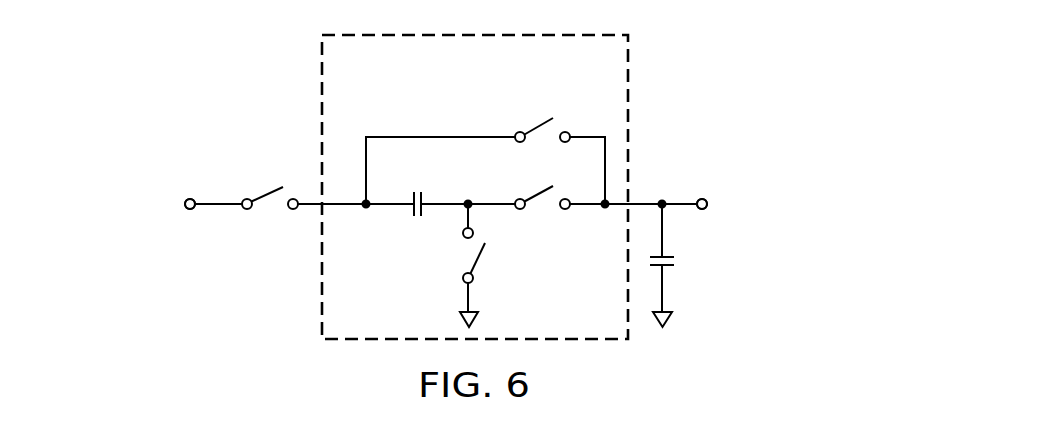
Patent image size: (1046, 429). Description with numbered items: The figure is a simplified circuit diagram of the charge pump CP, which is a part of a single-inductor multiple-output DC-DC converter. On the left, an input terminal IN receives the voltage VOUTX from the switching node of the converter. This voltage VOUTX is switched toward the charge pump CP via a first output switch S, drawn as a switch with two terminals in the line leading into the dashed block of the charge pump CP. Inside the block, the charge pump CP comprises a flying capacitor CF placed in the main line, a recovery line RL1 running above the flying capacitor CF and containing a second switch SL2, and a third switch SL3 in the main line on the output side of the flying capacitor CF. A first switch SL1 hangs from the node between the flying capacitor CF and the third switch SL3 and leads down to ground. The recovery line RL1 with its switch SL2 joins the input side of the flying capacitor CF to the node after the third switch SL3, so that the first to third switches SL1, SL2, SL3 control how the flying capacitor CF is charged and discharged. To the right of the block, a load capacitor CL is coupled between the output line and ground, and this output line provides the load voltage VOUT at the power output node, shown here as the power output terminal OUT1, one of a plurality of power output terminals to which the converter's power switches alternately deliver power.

The input terminal IN is at (187, 194).
The voltage VOUTX is at (151, 204).
The first output switch S is at (280, 187).
The charge pump CP is at (475, 187).
The recovery line RL1 is at (440, 158).
The second switch SL2 is at (560, 148).
The third switch SL3 is at (588, 185).
The first switch SL1 is at (492, 265).
The flying capacitor CF is at (417, 189).
The load capacitor CL is at (679, 264).
The power output terminal OUT1 is at (705, 194).
The load voltage VOUT is at (715, 204).